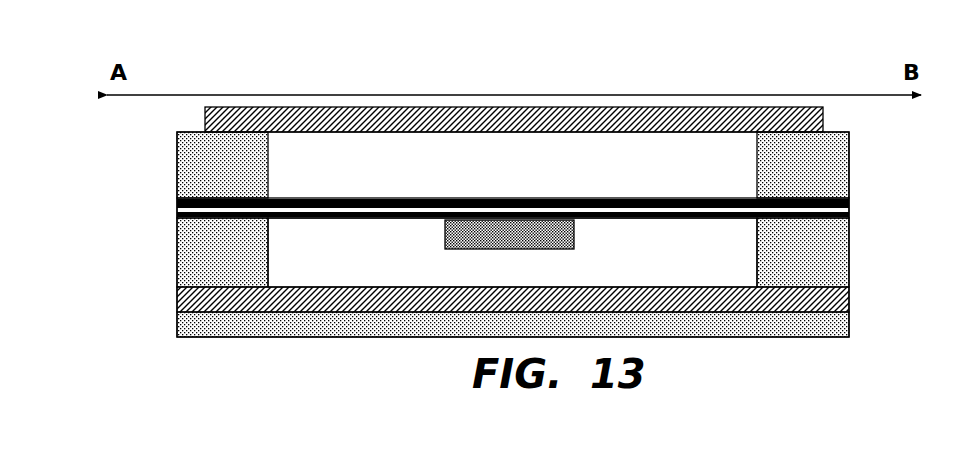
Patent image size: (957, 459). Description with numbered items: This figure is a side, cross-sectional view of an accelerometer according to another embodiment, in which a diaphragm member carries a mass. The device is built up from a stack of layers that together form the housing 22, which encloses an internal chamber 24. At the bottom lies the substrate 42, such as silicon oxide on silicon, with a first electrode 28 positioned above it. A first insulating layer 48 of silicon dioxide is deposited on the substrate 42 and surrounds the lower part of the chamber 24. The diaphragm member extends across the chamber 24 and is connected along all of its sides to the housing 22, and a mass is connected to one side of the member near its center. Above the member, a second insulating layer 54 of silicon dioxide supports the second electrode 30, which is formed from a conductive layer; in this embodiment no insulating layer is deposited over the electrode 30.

The housing 22 is at (175, 52).
The second electrode 30 is at (815, 122).
The second insulating layer 54 is at (190, 180).
The first insulating layer 48 is at (190, 237).
The chamber 24 is at (349, 267).
The first electrode 28 is at (838, 300).
The substrate 42 is at (840, 325).